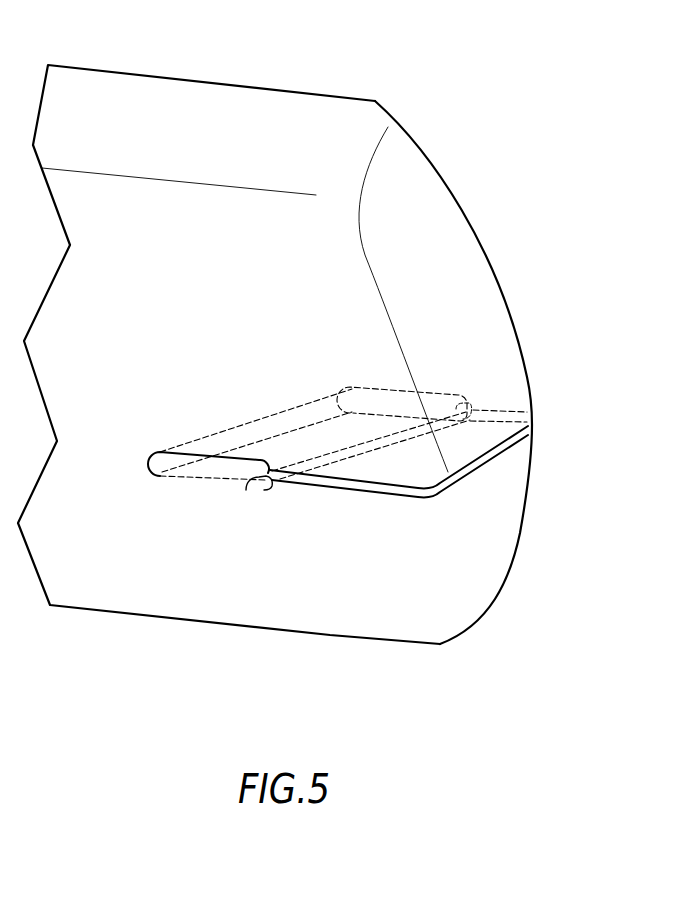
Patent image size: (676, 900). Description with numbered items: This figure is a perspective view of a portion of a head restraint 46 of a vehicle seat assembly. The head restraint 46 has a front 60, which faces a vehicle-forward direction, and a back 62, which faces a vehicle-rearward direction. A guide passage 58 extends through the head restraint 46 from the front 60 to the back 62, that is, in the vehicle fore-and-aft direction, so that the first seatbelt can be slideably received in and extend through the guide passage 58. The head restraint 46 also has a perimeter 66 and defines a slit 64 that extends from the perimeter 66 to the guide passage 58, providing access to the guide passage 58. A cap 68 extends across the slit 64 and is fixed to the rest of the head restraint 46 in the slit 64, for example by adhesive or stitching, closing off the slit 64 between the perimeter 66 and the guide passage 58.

The head restraint 46 is at (200, 83).
The guide passage 58 is at (177, 480).
The front 60 is at (195, 312).
The back 62 is at (518, 225).
The slit 64 is at (410, 493).
The perimeter 66 is at (530, 452).
The cap 68 is at (257, 478).